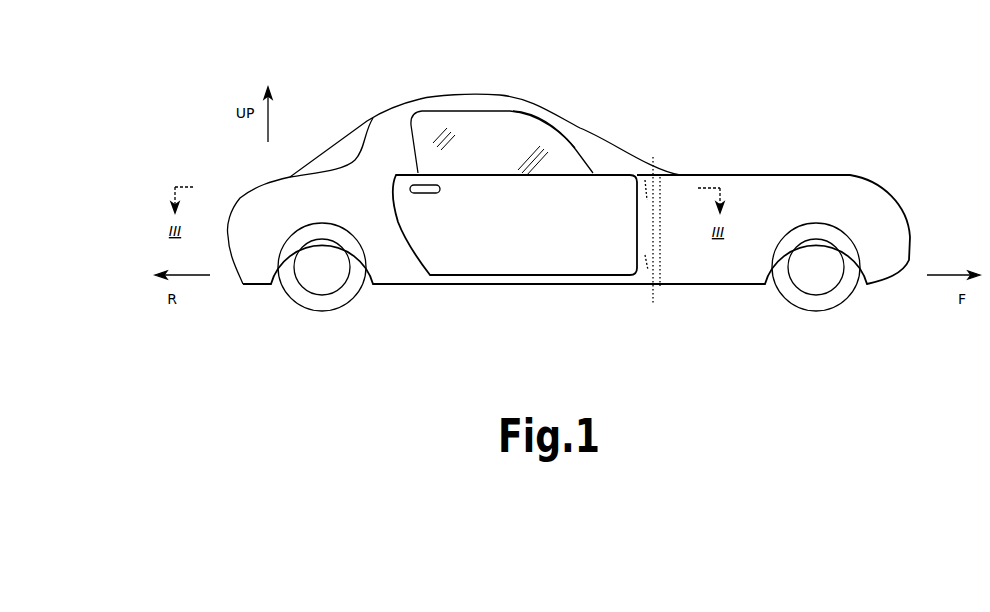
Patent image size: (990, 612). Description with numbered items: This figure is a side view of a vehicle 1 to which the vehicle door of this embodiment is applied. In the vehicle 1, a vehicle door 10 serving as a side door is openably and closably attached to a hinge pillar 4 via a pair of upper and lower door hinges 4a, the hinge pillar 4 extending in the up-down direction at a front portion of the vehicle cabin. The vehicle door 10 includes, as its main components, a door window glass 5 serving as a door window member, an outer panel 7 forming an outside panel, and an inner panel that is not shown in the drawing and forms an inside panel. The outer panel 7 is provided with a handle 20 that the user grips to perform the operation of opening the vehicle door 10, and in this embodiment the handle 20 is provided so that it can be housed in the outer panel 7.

The vehicle 1 is at (680, 83).
The hinge pillar 4 is at (665, 193).
The door hinges 4a is at (654, 233).
The door window glass 5 is at (533, 125).
The outer panel 7 is at (516, 225).
The vehicle door 10 is at (560, 261).
The handle 20 is at (425, 193).